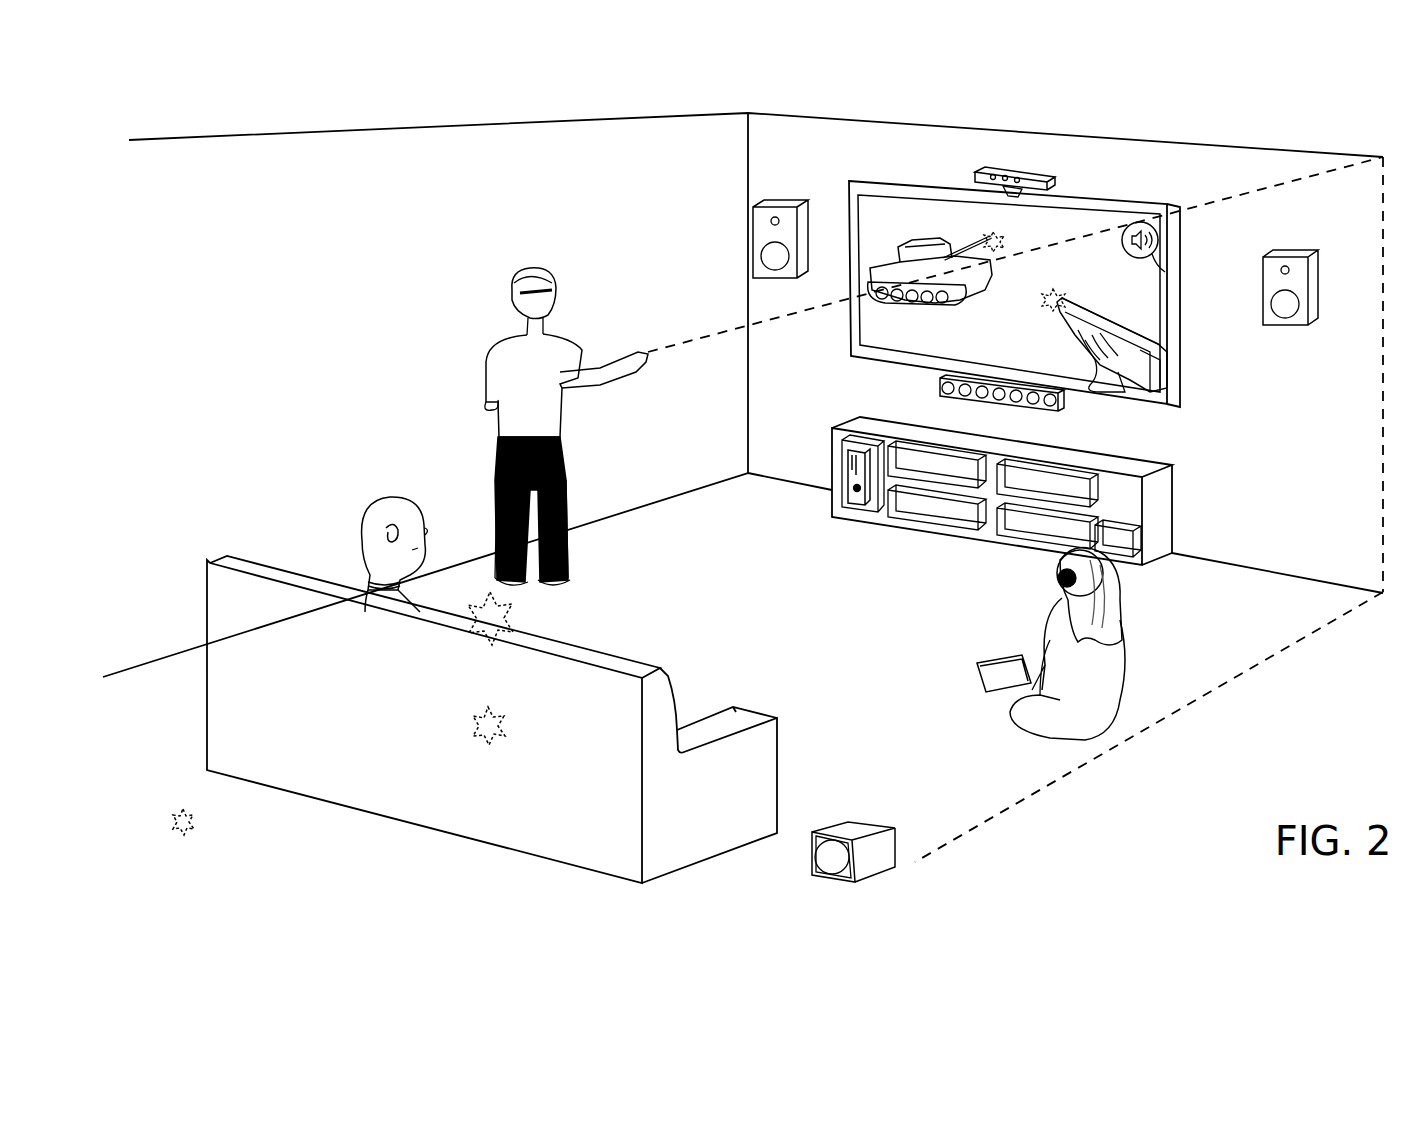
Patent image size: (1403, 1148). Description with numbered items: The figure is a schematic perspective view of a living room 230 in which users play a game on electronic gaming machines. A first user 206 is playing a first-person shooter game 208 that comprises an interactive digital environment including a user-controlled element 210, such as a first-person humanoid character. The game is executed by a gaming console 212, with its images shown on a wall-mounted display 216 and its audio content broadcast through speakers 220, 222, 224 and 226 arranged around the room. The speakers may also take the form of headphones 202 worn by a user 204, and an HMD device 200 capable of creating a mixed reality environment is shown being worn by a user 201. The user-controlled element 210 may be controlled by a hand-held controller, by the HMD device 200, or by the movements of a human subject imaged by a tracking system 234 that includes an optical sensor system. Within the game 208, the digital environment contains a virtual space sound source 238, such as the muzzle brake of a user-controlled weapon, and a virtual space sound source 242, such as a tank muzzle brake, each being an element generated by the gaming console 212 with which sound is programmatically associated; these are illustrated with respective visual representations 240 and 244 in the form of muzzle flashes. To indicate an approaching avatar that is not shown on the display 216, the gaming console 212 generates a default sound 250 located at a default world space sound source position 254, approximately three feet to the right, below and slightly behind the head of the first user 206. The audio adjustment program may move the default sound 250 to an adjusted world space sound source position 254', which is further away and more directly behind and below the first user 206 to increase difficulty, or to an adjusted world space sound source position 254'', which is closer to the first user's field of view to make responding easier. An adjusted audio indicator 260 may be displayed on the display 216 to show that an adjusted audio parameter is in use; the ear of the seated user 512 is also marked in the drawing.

The HMD device 200 is at (550, 292).
The user 201 is at (497, 492).
The headphones 202 is at (1058, 575).
The user 204 is at (1002, 698).
The first user 206 is at (378, 499).
The first-person shooter game 208 is at (866, 222).
The user-controlled element 210 is at (1088, 376).
The gaming console 212 is at (853, 509).
The wall-mounted display 216 is at (1181, 232).
The speaker 220 is at (790, 206).
The speaker 222 is at (1312, 255).
The speaker 224 is at (1062, 410).
The speaker 226 is at (850, 822).
The living room 230 is at (840, 142).
The tracking system 234 is at (1052, 176).
The virtual space sound source 238 is at (1066, 297).
The visual representation 240 is at (1047, 297).
The virtual space sound source 242 is at (989, 244).
The visual representation 244 is at (997, 236).
The default sound 250 is at (468, 640).
The default world space sound source position 254 is at (556, 739).
The adjusted world space sound source position 254' is at (245, 807).
The adjusted world space sound source position 254'' is at (467, 556).
The adjusted audio indicator 260 is at (1165, 272).
The ear of user 512 is at (390, 540).